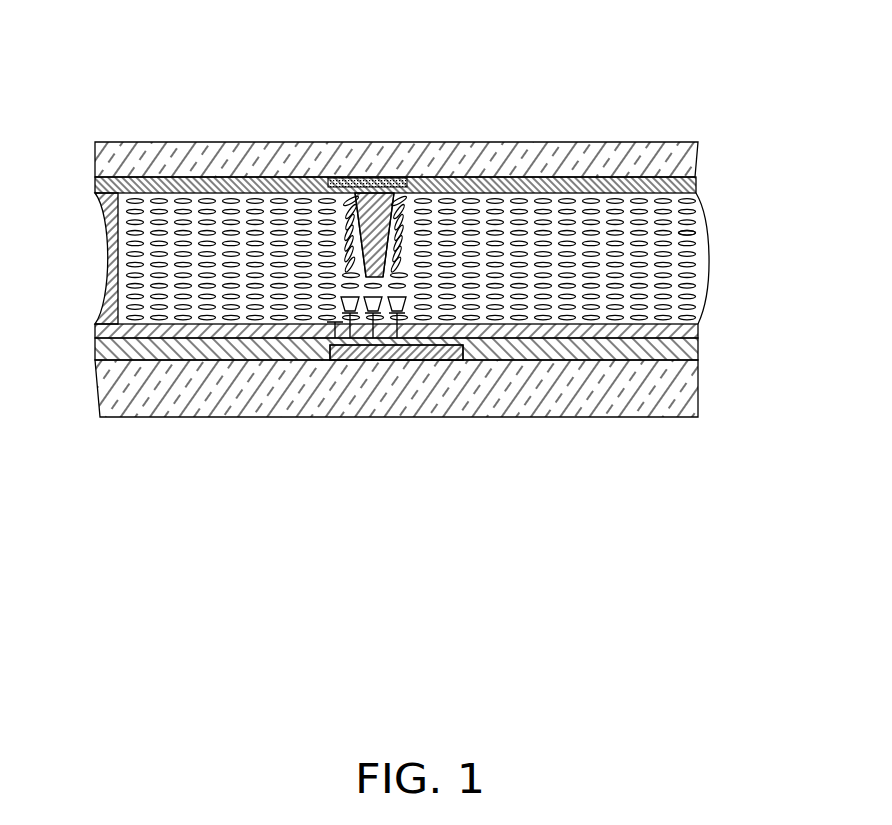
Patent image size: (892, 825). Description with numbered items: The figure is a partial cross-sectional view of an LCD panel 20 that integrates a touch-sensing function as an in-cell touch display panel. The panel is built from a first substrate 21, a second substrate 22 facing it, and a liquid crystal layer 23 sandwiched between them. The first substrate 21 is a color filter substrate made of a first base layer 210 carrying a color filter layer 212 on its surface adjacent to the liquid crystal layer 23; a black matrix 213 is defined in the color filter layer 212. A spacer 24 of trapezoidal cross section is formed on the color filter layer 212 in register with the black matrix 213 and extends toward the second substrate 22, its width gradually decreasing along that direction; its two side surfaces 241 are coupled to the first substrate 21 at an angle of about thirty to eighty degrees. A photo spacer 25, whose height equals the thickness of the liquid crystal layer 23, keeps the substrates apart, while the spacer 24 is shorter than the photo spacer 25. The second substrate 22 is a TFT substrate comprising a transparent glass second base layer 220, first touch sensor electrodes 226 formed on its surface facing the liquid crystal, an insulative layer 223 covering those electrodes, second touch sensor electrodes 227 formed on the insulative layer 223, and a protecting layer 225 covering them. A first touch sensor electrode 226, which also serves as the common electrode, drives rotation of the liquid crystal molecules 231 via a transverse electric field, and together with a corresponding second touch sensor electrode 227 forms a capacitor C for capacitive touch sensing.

The LCD panel 20 is at (437, 42).
The first substrate 21 is at (452, 142).
The first base layer 210 is at (673, 150).
The color filter layer 212 is at (696, 181).
The black matrix 213 is at (345, 179).
The spacer 24 is at (378, 205).
The side surfaces 241 is at (350, 208).
The photo spacer 25 is at (103, 214).
The liquid crystal layer 23 is at (456, 258).
The liquid crystal molecules 231 is at (690, 232).
The second substrate 22 is at (401, 388).
The protecting layer 225 is at (698, 328).
The insulative layer 223 is at (687, 348).
The first touch sensor electrode 226 is at (383, 345).
The second touch sensor electrode 227 is at (377, 330).
The capacitor C is at (323, 323).
The second base layer 220 is at (690, 401).